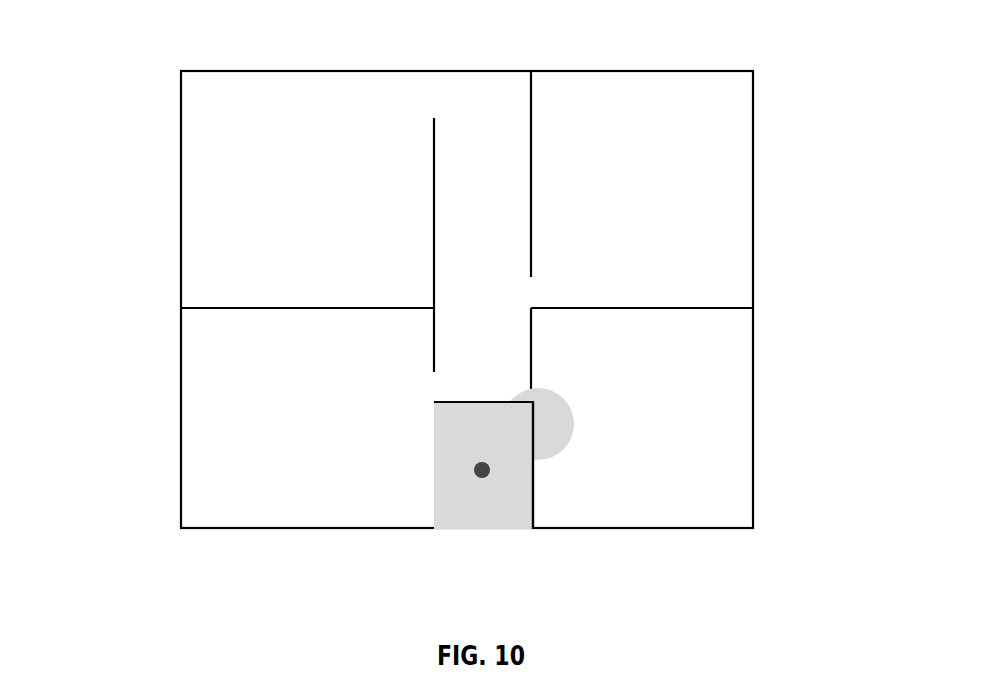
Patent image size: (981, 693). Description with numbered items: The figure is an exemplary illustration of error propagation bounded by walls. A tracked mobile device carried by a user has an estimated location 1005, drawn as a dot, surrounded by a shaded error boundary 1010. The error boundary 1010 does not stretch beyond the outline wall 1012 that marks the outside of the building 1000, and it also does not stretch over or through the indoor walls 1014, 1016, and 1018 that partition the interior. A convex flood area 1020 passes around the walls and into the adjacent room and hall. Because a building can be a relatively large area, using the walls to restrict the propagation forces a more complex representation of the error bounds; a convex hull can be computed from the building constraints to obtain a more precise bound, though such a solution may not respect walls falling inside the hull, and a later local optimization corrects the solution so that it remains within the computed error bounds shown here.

The building 1000 is at (133, 215).
The estimated location 1005 is at (482, 474).
The error boundary 1010 is at (568, 440).
The outline wall 1012 is at (195, 528).
The indoor wall 1014 is at (435, 433).
The indoor wall 1016 is at (532, 495).
The indoor wall 1018 is at (483, 402).
The convex flood area 1020 is at (587, 402).